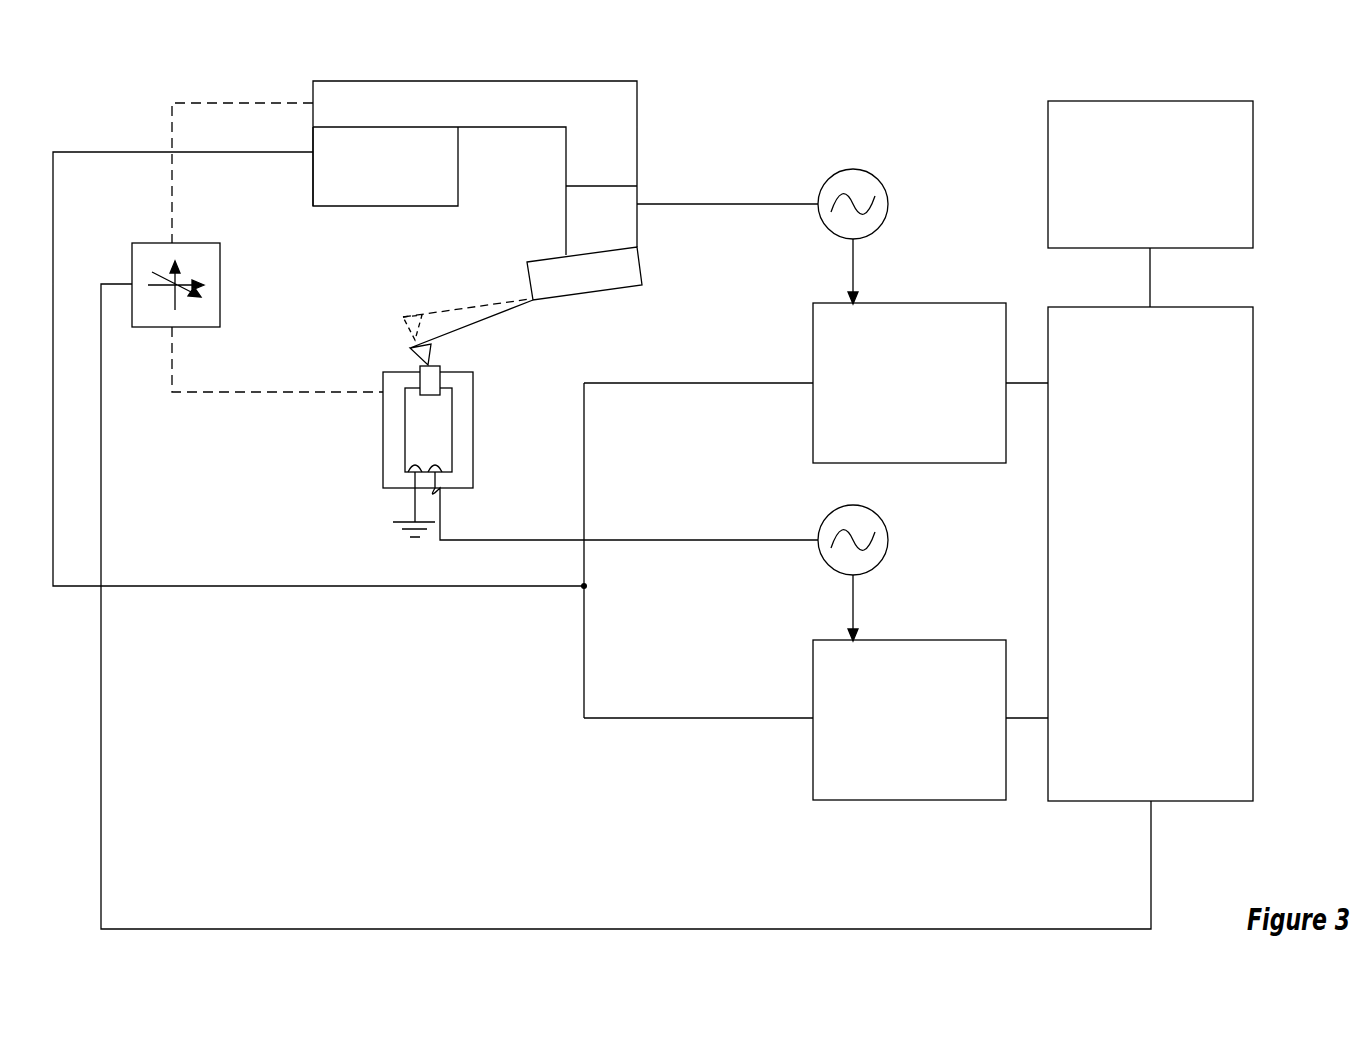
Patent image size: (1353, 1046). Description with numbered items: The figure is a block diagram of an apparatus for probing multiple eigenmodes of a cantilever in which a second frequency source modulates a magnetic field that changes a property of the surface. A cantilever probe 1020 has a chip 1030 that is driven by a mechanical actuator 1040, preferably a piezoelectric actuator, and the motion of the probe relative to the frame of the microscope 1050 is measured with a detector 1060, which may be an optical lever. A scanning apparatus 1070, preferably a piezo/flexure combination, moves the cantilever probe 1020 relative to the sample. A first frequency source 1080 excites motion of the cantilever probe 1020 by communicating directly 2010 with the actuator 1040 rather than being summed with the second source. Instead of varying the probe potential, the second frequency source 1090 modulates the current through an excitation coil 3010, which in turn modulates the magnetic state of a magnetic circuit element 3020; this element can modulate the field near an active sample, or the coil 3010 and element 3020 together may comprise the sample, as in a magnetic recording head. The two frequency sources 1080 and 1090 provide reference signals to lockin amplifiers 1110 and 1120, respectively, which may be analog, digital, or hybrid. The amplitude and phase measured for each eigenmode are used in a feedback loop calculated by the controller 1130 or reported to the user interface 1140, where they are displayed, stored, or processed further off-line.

The cantilever probe 1020 is at (505, 310).
The chip of the cantilever probe 1030 is at (608, 290).
The mechanical actuator 1040 is at (637, 195).
The frame of the microscope 1050 is at (637, 121).
The detector 1060 is at (423, 206).
The scanning apparatus 1070 is at (201, 243).
The first frequency source 1080 is at (853, 165).
The second frequency source 1090 is at (853, 503).
The lockin amplifier 1110 is at (917, 303).
The lockin amplifier 1120 is at (917, 640).
The controller 1130 is at (1202, 307).
The user interface 1140 is at (1202, 101).
The direct communication 2010 is at (748, 204).
The excitation coil 3010 is at (413, 512).
The magnetic circuit element 3020 is at (382, 383).